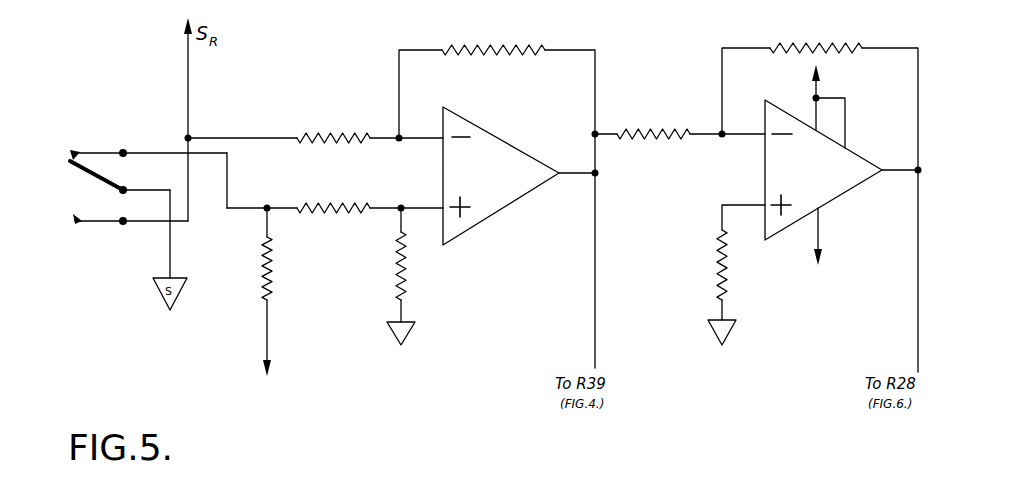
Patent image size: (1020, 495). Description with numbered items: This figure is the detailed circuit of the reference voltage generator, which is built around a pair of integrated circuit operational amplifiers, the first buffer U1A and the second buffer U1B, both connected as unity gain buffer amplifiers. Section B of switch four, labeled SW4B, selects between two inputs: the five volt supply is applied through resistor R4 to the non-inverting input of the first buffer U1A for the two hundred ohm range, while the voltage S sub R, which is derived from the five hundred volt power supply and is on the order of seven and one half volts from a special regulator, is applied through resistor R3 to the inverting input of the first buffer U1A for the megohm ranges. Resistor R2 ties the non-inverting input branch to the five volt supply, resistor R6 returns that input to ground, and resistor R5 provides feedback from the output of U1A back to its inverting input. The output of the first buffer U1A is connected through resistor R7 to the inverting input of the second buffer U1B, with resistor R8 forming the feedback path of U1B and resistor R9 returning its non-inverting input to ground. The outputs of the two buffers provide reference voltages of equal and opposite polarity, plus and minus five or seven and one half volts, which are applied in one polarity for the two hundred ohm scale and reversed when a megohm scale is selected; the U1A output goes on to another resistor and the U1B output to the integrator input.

The section B of switch SW4 SW4B is at (125, 179).
The resistor R2 is at (259, 303).
The resistor R3 is at (315, 125).
The resistor R4 is at (370, 196).
The resistor R5 is at (497, 195).
The resistor R6 is at (385, 276).
The resistor R7 is at (680, 122).
The resistor R8 is at (820, 195).
The resistor R9 is at (720, 275).
The first buffer amplifier U1A is at (515, 176).
The second buffer amplifier U1B is at (834, 169).